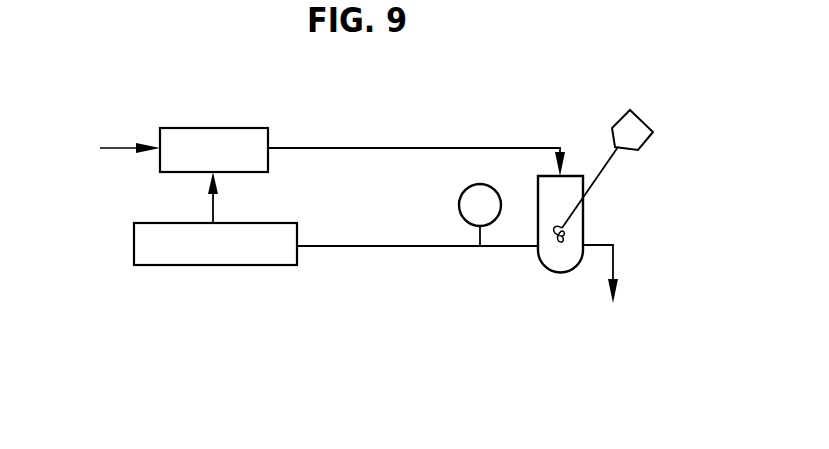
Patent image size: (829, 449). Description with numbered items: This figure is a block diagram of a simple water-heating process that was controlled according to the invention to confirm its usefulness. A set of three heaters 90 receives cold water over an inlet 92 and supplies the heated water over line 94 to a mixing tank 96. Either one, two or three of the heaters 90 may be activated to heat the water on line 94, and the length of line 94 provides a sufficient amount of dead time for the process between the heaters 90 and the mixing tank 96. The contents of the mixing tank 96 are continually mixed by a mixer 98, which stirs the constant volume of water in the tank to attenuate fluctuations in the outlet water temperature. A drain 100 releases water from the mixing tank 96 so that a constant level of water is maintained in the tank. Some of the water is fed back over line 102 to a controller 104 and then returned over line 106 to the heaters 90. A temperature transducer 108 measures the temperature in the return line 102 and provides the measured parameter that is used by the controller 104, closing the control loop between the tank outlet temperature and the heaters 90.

The heaters 90 is at (268, 133).
The inlet 92 is at (122, 150).
The line 94 is at (437, 148).
The mixing tank 96 is at (552, 273).
The mixer 98 is at (604, 158).
The drain 100 is at (613, 263).
The line 102 is at (425, 247).
The controller 104 is at (275, 265).
The line 106 is at (213, 213).
The temperature transducer 108 is at (460, 204).